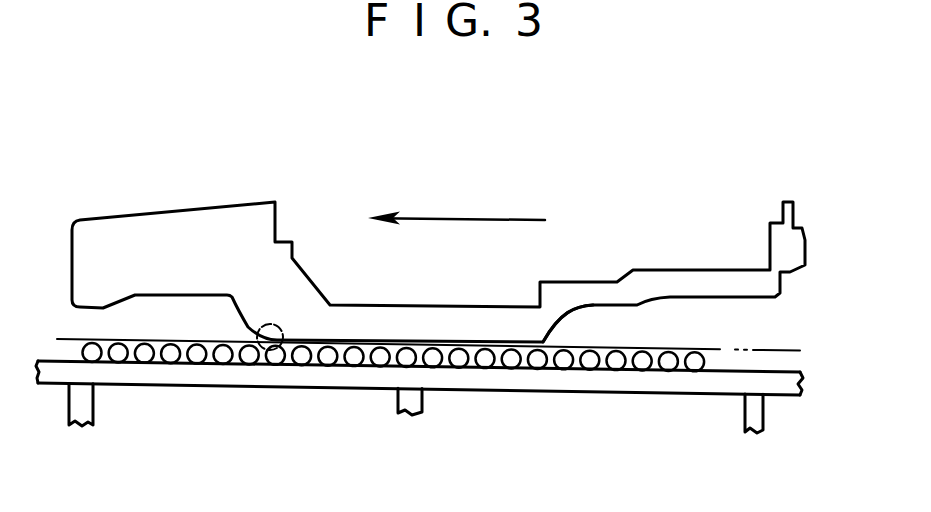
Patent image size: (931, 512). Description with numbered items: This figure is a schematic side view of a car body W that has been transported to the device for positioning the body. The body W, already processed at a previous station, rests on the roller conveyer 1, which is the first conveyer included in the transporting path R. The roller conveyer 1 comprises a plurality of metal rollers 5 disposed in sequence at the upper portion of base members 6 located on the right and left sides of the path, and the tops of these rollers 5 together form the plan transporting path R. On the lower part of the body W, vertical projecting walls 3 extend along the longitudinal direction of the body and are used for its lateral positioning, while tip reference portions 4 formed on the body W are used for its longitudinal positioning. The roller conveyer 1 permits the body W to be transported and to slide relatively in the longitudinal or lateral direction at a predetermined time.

The body W is at (654, 232).
The roller conveyer 1 is at (782, 338).
The vertical projecting walls 3 is at (477, 342).
The tip reference portions 4 is at (243, 330).
The metal rollers 5 is at (515, 368).
The base members 6 is at (685, 370).
The transporting path R is at (723, 314).